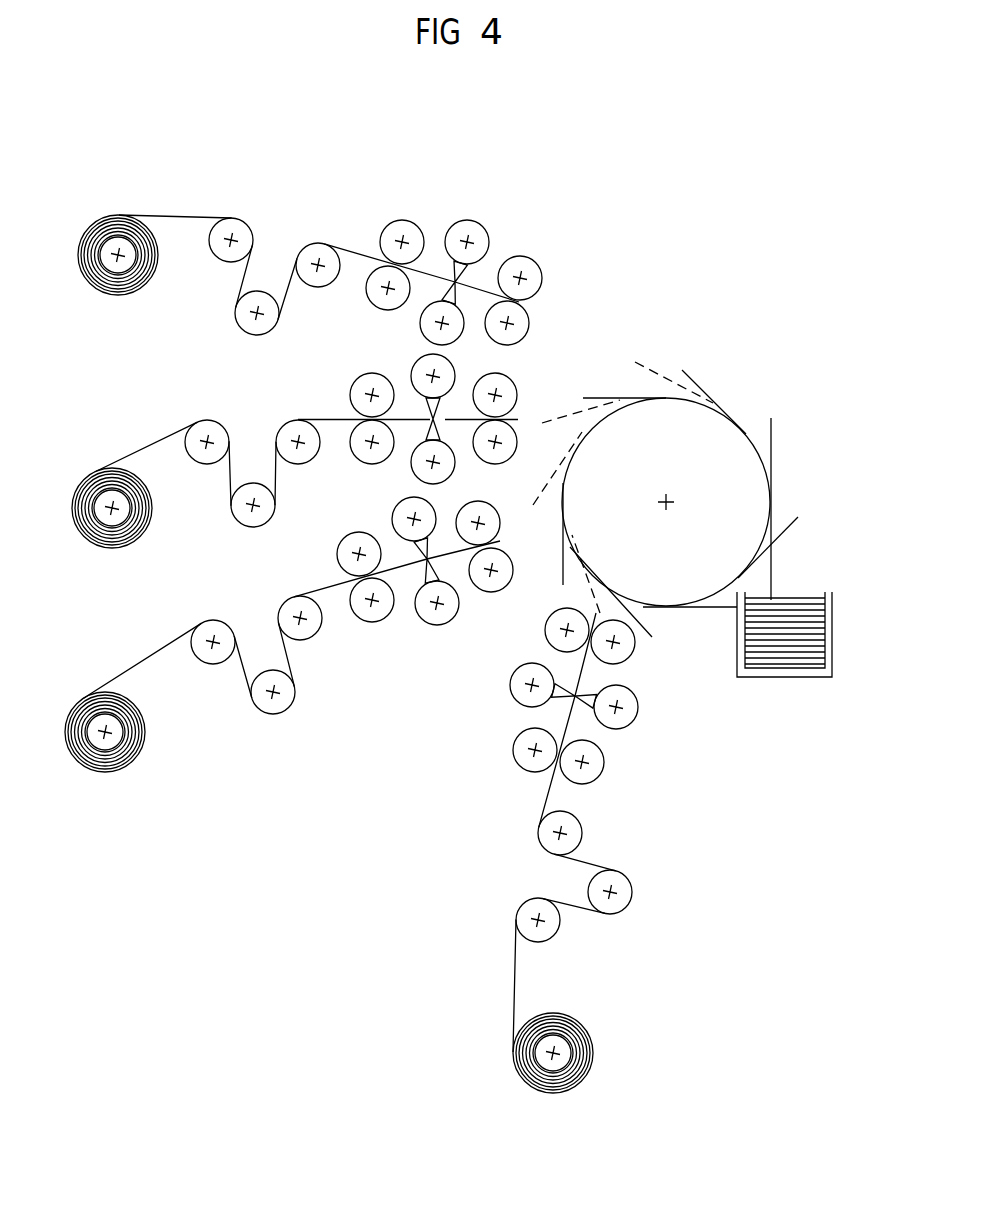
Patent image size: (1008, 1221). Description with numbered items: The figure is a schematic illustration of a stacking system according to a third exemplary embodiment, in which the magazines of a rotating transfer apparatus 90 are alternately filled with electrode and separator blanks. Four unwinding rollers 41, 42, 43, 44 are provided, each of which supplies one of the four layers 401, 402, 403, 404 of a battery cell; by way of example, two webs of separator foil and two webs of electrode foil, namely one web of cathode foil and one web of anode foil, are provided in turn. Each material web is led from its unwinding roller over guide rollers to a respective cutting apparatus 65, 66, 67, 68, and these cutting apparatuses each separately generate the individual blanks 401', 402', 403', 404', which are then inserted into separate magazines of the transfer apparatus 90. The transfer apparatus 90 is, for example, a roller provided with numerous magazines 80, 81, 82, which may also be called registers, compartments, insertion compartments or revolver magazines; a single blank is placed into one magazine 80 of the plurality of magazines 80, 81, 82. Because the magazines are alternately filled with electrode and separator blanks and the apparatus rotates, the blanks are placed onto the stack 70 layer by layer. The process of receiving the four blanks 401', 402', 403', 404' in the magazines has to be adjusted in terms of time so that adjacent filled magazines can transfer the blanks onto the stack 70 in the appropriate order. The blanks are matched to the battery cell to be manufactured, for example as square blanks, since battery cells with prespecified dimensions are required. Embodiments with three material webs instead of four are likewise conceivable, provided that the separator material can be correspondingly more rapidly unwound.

The unwinding roller 41 is at (118, 268).
The unwinding roller 42 is at (120, 522).
The unwinding roller 43 is at (103, 745).
The unwinding roller 44 is at (568, 1053).
The layer 401 is at (319, 240).
The layer 402 is at (303, 454).
The layer 403 is at (292, 627).
The layer 404 is at (526, 832).
The blank 401' is at (674, 352).
The blank 402' is at (579, 386).
The blank 403' is at (542, 530).
The blank 404' is at (627, 574).
The cutting apparatus 65 is at (452, 264).
The cutting apparatus 66 is at (424, 405).
The cutting apparatus 67 is at (420, 568).
The cutting apparatus 68 is at (595, 689).
The stack 70 is at (805, 679).
The magazine 80 is at (688, 376).
The magazine 81 is at (773, 421).
The magazine 82 is at (799, 521).
The rotating transfer apparatus 90 is at (681, 474).